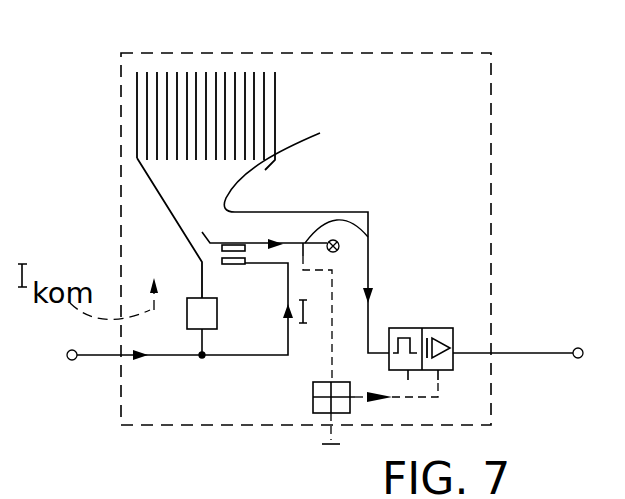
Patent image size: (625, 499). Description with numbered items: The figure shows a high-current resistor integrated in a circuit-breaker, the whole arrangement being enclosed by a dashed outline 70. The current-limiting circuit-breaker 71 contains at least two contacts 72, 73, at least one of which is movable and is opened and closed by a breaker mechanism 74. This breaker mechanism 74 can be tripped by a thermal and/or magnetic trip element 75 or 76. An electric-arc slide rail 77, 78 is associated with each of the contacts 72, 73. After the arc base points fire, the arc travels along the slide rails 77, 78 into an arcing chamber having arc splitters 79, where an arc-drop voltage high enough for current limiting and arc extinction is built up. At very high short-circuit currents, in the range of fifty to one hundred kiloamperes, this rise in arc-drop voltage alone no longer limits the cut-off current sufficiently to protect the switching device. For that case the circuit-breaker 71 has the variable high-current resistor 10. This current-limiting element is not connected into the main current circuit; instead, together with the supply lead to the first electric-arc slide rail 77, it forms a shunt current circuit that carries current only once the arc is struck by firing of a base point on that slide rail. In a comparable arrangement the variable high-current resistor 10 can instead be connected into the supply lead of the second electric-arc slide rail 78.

The variable high-current resistor 10 is at (194, 329).
The evaluation circuit 70 is at (491, 200).
The current-limiting circuit-breaker 71 is at (212, 208).
The contact 72 is at (233, 265).
The contact 73 is at (240, 243).
The breaker mechanism 74 is at (313, 408).
The thermal trip element 75 is at (393, 328).
The magnetic trip element 76 is at (445, 370).
The first electric-arc slide rail 77 is at (167, 207).
The second electric-arc slide rail 78 is at (306, 229).
The arc splitters 79 is at (187, 72).